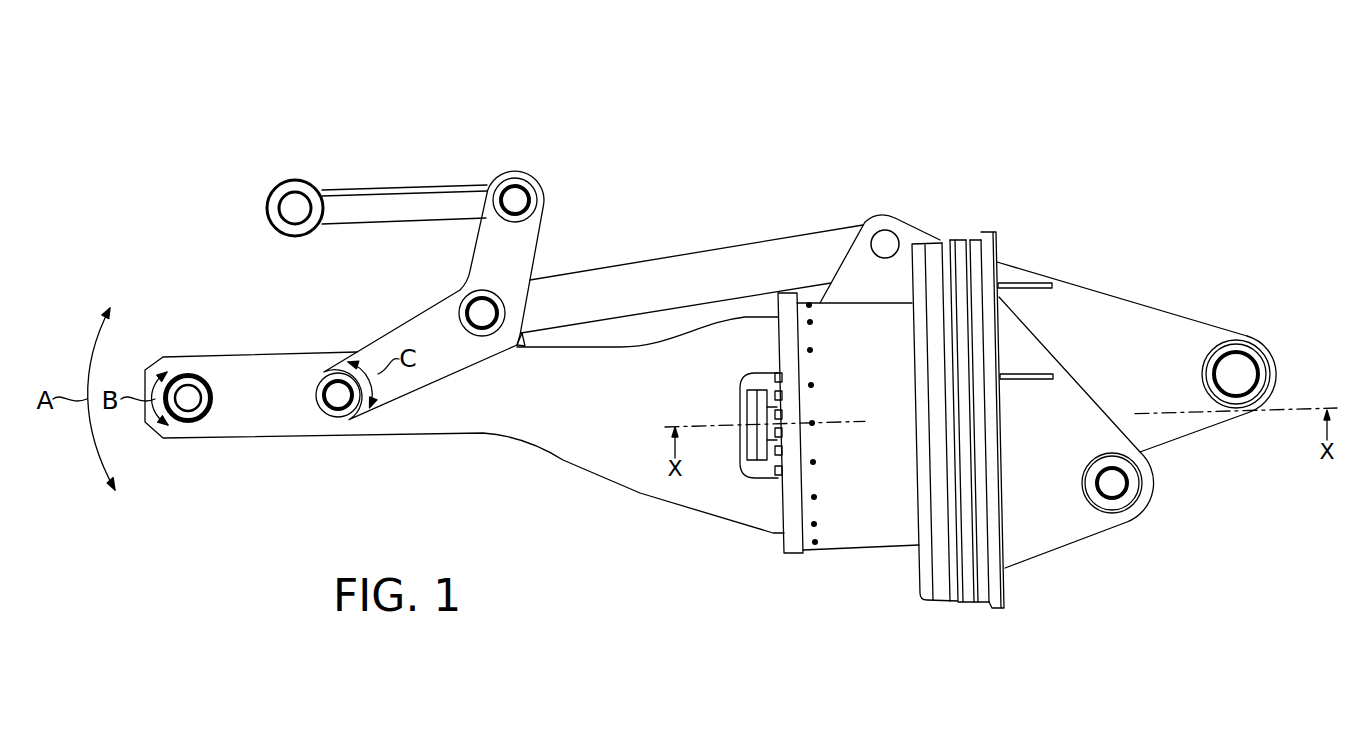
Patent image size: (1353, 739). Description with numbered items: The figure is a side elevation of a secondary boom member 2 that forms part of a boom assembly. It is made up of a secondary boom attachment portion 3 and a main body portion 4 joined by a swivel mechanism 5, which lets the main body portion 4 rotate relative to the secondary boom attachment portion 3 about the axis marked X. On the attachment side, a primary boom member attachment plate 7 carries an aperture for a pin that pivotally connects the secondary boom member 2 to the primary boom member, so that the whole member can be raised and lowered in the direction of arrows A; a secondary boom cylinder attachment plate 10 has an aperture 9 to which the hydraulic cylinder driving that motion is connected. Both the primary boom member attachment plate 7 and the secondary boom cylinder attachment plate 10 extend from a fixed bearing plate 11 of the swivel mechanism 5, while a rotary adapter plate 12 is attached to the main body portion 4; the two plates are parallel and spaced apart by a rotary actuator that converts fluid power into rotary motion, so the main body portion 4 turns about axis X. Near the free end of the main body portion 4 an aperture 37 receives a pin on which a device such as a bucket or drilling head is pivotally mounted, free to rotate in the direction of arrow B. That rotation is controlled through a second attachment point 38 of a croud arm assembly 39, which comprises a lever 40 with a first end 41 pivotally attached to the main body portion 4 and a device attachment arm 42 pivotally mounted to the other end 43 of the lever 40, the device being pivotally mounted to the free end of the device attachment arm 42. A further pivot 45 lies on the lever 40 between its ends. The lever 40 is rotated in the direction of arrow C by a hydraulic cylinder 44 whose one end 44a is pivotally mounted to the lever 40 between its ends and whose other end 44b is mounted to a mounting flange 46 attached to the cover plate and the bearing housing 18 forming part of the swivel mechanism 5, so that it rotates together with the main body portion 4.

The secondary boom member 2 is at (716, 588).
The secondary boom attachment portion 3 is at (1158, 300).
The main body portion 4 is at (524, 450).
The swivel mechanism 5 is at (894, 598).
The primary boom member attachment plate 7 is at (1043, 545).
The aperture 9 is at (1240, 362).
The secondary boom cylinder attachment plate 10 is at (1093, 293).
The fixed bearing plate 11 is at (996, 240).
The rotary adapter plate 12 is at (780, 338).
The bearing housing 18 is at (945, 594).
The aperture 37 is at (190, 406).
The second attachment point 38 is at (295, 205).
The croud arm assembly 39 is at (472, 138).
The lever 40 is at (478, 245).
The first end 41 is at (323, 370).
The device attachment arm 42 is at (389, 201).
The end of lever 43 is at (518, 170).
The hydraulic cylinder 44 is at (647, 272).
The one end of hydraulic cylinder 44a is at (521, 345).
The other end of hydraulic cylinder 44b is at (861, 213).
The lever intermediate pivot 45 is at (476, 311).
The mounting flange 46 is at (868, 247).